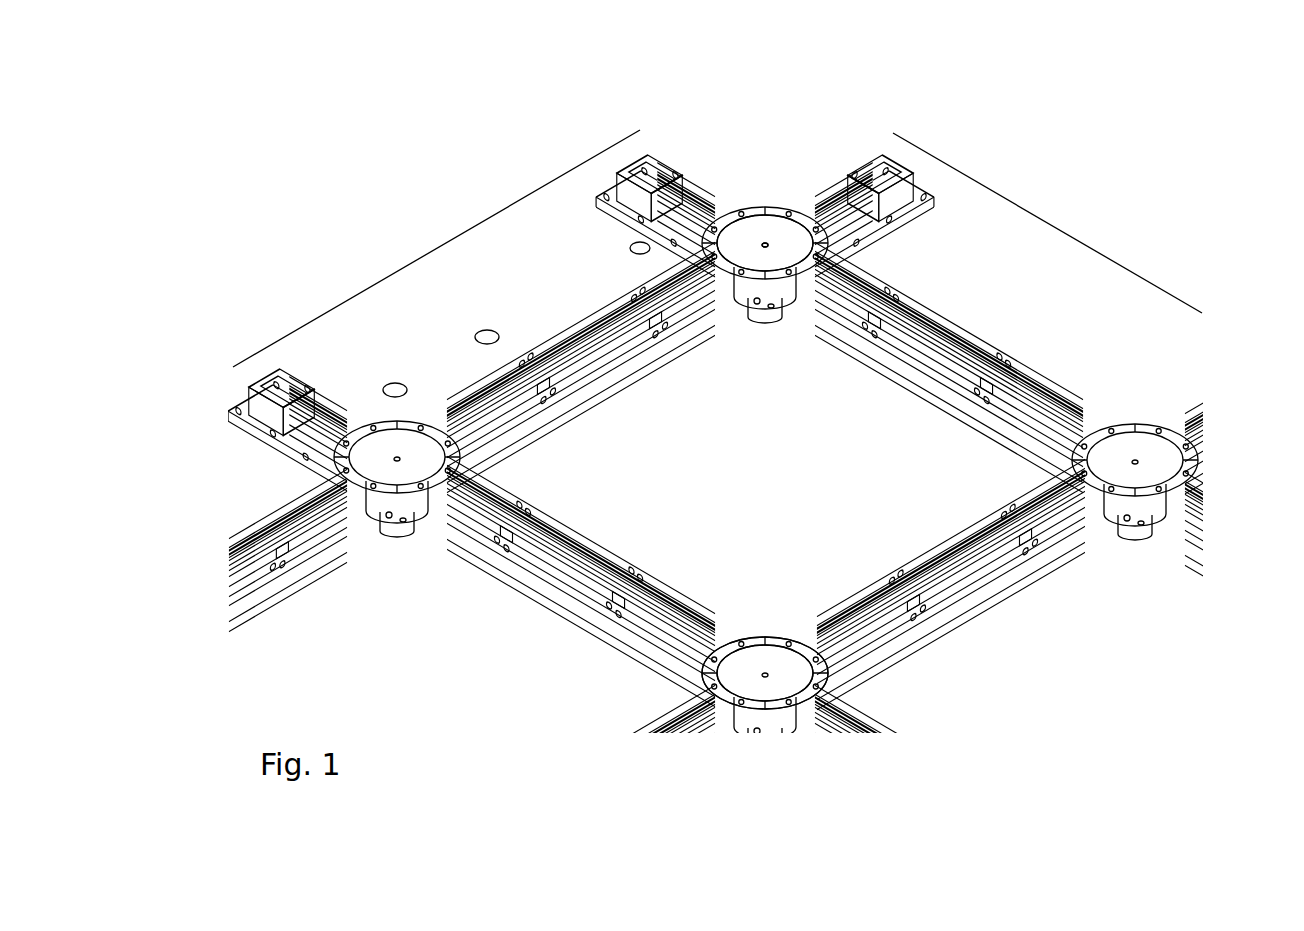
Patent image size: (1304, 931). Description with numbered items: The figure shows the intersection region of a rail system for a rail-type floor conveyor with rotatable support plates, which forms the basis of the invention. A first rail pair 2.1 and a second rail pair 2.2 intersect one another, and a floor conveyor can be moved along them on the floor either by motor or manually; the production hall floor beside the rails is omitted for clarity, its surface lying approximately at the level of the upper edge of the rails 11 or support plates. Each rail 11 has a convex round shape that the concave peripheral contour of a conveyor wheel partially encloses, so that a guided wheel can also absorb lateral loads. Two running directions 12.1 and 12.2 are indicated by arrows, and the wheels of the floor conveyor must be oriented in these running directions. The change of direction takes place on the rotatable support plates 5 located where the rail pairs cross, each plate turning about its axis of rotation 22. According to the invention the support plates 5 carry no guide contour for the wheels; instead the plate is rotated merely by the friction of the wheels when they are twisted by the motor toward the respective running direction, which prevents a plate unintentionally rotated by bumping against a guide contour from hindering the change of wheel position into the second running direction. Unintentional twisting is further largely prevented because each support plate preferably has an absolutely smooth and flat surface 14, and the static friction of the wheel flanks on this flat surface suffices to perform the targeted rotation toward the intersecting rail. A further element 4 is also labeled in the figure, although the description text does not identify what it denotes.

The first rail pair 2.1 is at (677, 720).
The second rail pair 2.2 is at (1197, 500).
The base plate 4 is at (585, 287).
The rotatable support plate 5 is at (795, 245).
The rail 11 is at (847, 201).
The running direction 12.1 is at (352, 352).
The running direction 12.2 is at (1148, 355).
The smooth and flat surface 14 is at (742, 682).
The axis of rotation of the support plate 22 is at (763, 243).